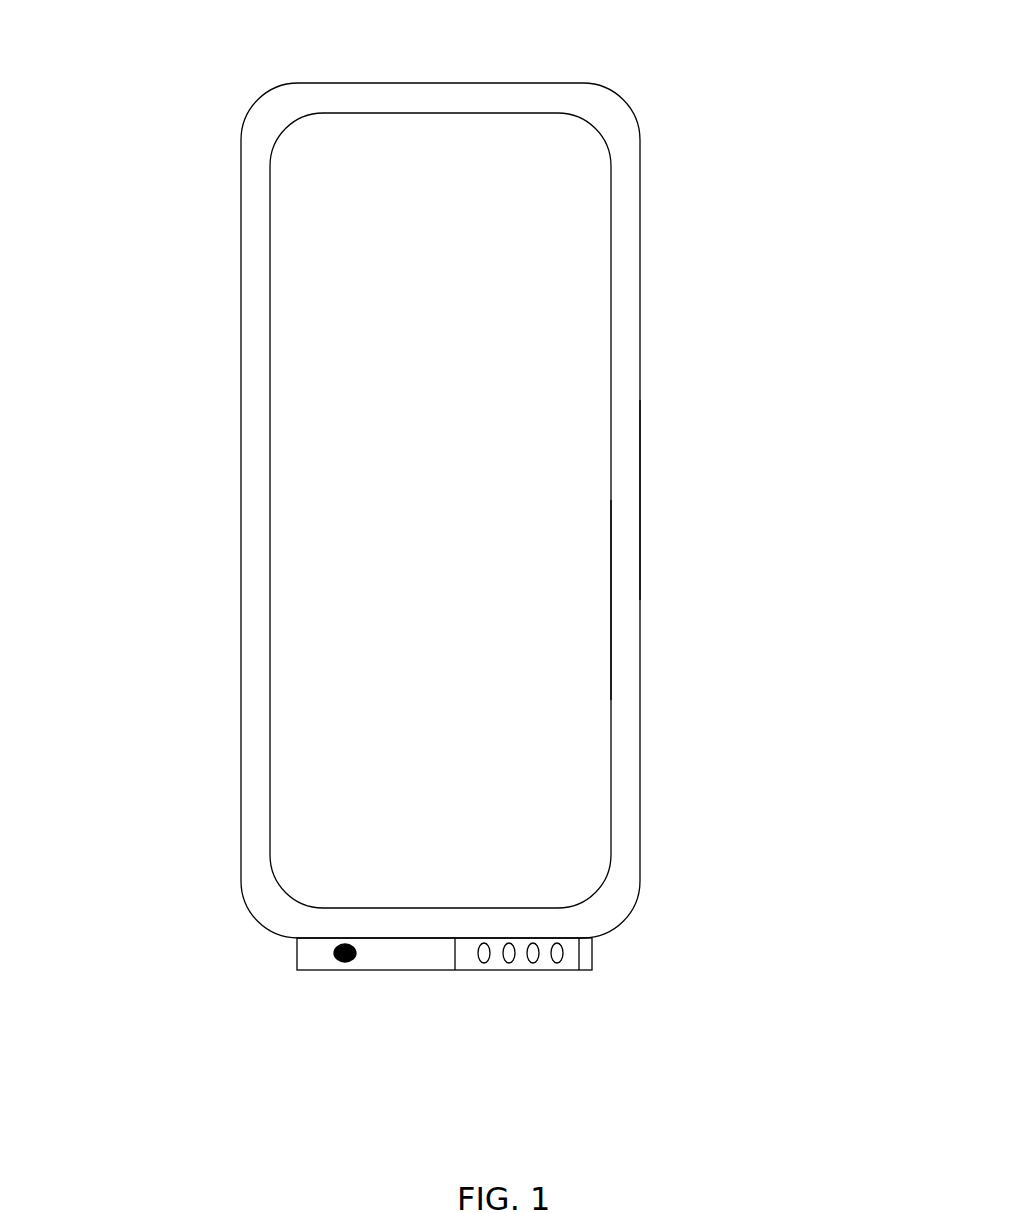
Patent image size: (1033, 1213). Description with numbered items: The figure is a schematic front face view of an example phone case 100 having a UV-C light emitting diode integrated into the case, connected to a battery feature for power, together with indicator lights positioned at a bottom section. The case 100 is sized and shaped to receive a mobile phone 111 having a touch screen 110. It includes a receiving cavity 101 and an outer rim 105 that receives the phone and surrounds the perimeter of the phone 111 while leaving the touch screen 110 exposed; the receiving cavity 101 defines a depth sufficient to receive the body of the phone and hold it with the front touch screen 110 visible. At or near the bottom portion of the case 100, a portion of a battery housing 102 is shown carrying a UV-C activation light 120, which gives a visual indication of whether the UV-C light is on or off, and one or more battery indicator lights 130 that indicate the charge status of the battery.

The phone case 100 is at (448, 83).
The receiving cavity 101 is at (612, 240).
The outer rim 105 is at (641, 523).
The touch screen 110 is at (423, 467).
The phone 111 is at (610, 586).
The battery housing 102 is at (296, 953).
The UV-C activation light 120 is at (345, 973).
The battery indicator lights 130 is at (508, 973).